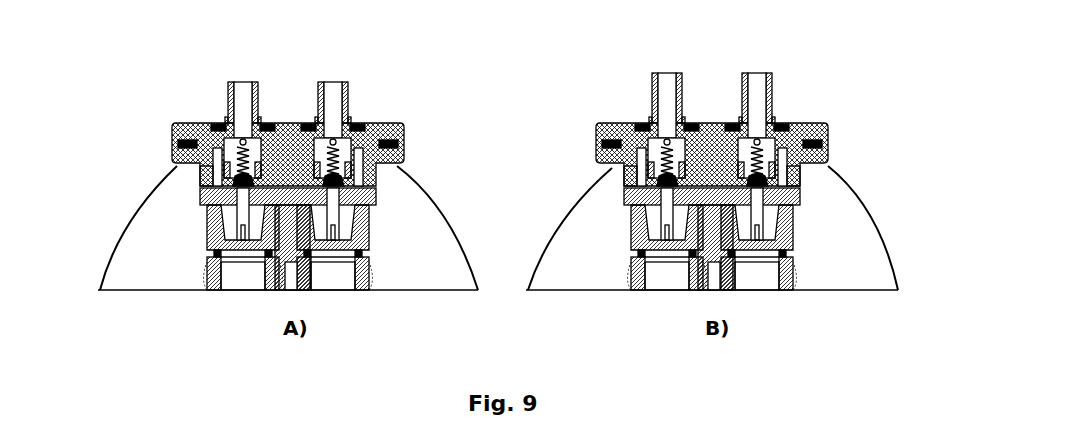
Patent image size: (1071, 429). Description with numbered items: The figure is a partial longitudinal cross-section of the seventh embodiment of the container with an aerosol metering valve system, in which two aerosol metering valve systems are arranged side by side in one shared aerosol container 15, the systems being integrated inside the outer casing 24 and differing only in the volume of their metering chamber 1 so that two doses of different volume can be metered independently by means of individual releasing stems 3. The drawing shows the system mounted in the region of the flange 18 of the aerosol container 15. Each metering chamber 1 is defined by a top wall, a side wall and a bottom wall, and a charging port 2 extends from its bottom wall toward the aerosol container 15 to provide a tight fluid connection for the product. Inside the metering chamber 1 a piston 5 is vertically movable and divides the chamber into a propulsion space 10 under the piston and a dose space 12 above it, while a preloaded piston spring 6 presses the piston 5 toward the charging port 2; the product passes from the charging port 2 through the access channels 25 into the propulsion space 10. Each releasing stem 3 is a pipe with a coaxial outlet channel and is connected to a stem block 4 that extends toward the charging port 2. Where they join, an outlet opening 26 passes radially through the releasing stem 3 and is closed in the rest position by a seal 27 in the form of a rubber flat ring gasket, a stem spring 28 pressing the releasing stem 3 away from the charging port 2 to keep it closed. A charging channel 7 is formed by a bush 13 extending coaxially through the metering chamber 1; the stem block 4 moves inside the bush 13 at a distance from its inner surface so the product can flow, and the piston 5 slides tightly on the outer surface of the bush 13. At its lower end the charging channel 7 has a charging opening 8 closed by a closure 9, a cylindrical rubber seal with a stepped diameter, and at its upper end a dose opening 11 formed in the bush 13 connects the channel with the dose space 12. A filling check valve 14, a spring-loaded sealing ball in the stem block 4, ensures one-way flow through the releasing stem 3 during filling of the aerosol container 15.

The metering chamber 1 is at (617, 170).
The charging port 2 is at (360, 232).
The releasing stem 3 is at (768, 85).
The stem block 4 is at (345, 152).
The piston 5 is at (788, 184).
The piston spring 6 is at (559, 154).
The charging channel 7 is at (355, 178).
The charging opening 8 is at (660, 190).
The closure 9 is at (658, 177).
The propulsion space 10 is at (212, 170).
The dose opening 11 is at (213, 145).
The dose space 12 is at (787, 168).
The bush 13 is at (640, 177).
The filling check valve 14 is at (240, 140).
The aerosol container 15 is at (92, 278).
The flange 18 is at (613, 157).
The outer casing 24 is at (895, 282).
The access channels 25 is at (770, 190).
The outlet opening 26 is at (790, 128).
The seal 27 is at (748, 128).
The stem spring 28 is at (236, 181).